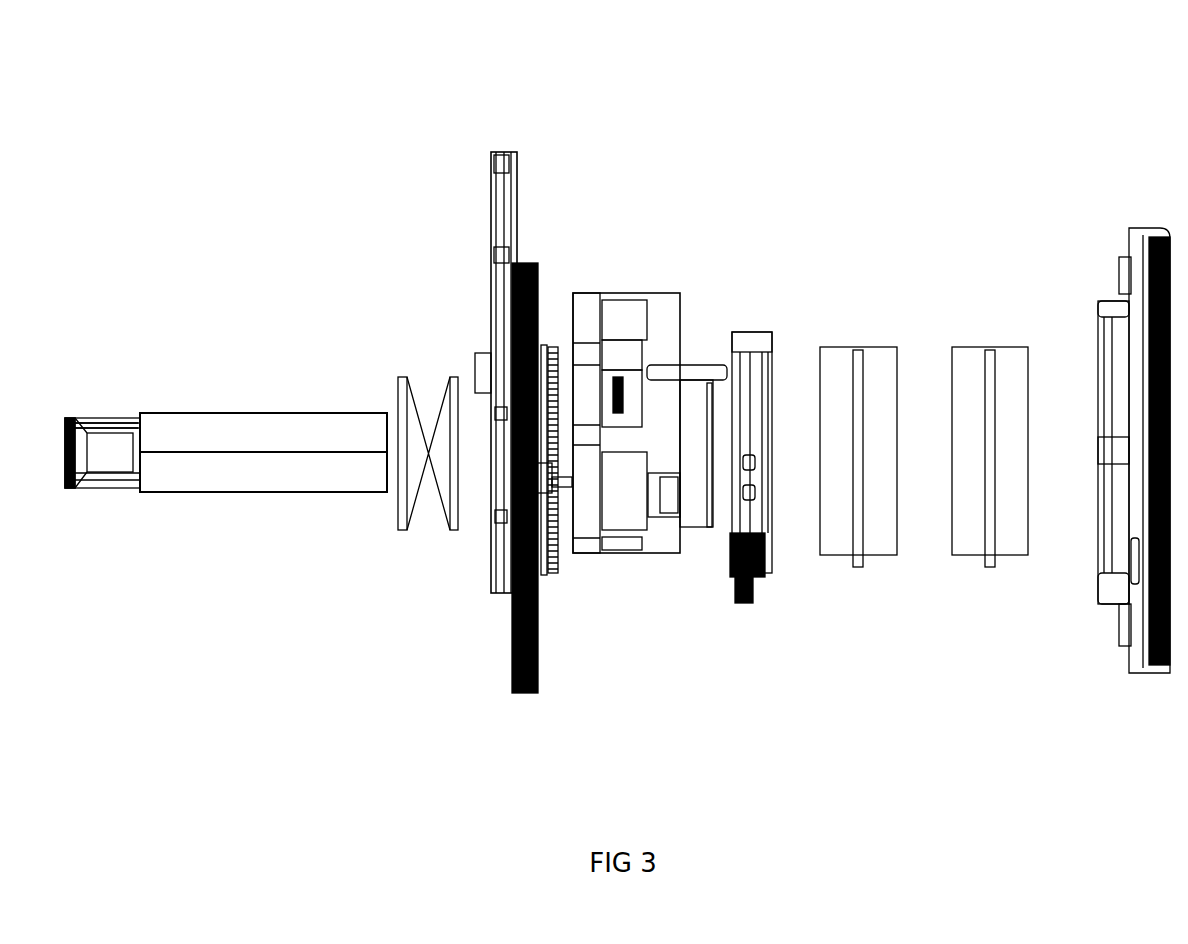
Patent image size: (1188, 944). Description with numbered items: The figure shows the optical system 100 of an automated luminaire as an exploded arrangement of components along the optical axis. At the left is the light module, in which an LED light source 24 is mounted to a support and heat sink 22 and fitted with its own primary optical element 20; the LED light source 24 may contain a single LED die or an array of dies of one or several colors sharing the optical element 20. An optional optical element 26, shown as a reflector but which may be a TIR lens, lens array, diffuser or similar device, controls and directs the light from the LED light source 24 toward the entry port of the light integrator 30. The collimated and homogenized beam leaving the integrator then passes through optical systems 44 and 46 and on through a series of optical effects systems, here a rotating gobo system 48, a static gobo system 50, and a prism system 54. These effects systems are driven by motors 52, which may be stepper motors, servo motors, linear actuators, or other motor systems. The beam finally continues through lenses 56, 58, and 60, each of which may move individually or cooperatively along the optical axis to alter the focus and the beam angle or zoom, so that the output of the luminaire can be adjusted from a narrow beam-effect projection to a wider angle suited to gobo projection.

The optical system 100 is at (566, 95).
The optical element 20 is at (80, 483).
The support and heat sink 22 is at (73, 421).
The LED light source 24 is at (94, 426).
The optical element 26 is at (124, 425).
The light integrator 30 is at (215, 427).
The optical system 44 is at (413, 415).
The optical system 46 is at (451, 380).
The rotating gobo system 48 is at (497, 597).
The static gobo system 50 is at (527, 693).
The motors 52 is at (618, 568).
The prism system 54 is at (763, 580).
The lens 56 is at (837, 367).
The lens 58 is at (968, 367).
The lens 60 is at (1104, 608).